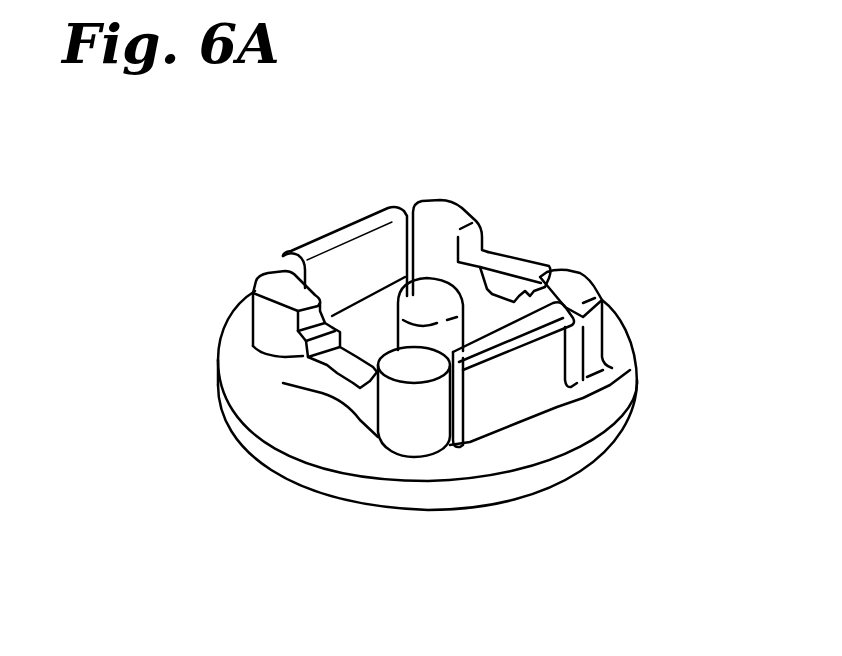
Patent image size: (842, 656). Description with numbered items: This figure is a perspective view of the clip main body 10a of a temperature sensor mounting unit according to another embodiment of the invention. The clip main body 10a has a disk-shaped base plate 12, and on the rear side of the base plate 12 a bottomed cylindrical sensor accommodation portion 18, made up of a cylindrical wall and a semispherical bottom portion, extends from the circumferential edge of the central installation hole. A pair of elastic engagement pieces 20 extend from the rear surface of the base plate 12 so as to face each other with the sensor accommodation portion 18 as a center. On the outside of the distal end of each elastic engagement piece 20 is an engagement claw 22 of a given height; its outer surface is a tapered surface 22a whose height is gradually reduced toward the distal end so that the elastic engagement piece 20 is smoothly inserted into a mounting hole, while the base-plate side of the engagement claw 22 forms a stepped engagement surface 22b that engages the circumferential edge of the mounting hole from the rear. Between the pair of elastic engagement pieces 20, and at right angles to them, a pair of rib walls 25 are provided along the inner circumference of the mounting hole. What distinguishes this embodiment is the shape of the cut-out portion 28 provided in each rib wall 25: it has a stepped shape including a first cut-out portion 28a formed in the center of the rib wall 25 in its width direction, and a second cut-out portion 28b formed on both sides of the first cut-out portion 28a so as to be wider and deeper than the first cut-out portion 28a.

The clip main body 10a is at (552, 242).
The base plate 12 is at (408, 478).
The sensor accommodation portion 18 is at (420, 340).
The elastic engagement piece 20 is at (319, 224).
The engagement claw 22 is at (593, 432).
The tapered surface 22a is at (513, 350).
The stepped engagement surface 22b is at (470, 380).
The rib wall 25 is at (582, 266).
The cut-out portion 28 is at (503, 268).
The first cut-out portion 28a is at (312, 380).
The second cut-out portion 28b is at (250, 352).